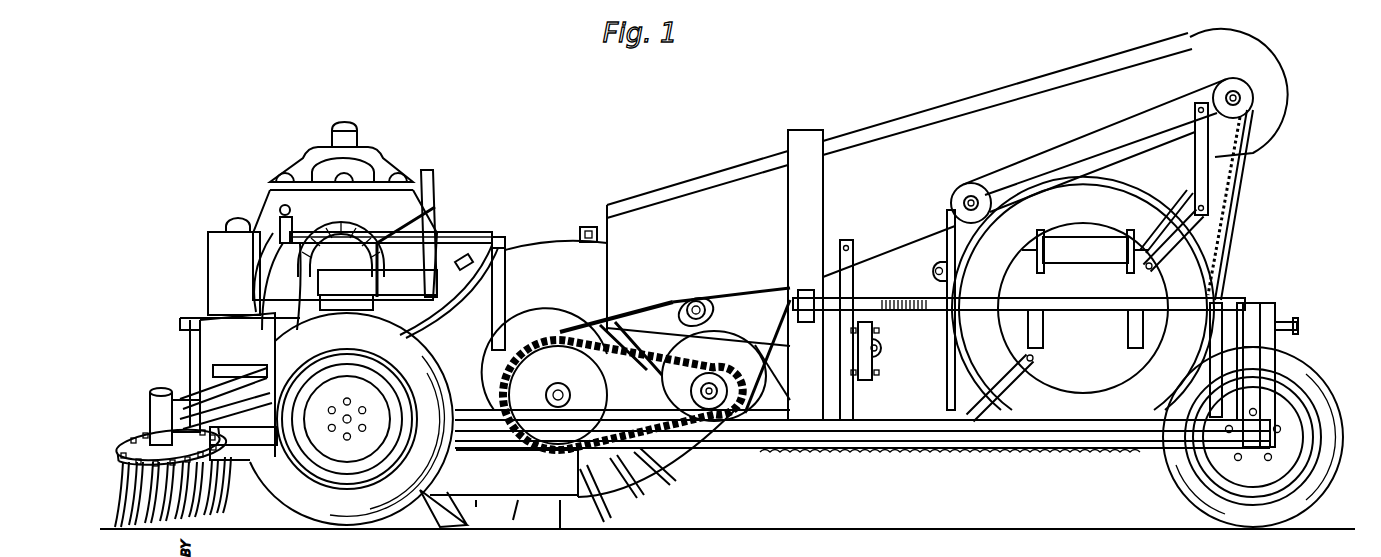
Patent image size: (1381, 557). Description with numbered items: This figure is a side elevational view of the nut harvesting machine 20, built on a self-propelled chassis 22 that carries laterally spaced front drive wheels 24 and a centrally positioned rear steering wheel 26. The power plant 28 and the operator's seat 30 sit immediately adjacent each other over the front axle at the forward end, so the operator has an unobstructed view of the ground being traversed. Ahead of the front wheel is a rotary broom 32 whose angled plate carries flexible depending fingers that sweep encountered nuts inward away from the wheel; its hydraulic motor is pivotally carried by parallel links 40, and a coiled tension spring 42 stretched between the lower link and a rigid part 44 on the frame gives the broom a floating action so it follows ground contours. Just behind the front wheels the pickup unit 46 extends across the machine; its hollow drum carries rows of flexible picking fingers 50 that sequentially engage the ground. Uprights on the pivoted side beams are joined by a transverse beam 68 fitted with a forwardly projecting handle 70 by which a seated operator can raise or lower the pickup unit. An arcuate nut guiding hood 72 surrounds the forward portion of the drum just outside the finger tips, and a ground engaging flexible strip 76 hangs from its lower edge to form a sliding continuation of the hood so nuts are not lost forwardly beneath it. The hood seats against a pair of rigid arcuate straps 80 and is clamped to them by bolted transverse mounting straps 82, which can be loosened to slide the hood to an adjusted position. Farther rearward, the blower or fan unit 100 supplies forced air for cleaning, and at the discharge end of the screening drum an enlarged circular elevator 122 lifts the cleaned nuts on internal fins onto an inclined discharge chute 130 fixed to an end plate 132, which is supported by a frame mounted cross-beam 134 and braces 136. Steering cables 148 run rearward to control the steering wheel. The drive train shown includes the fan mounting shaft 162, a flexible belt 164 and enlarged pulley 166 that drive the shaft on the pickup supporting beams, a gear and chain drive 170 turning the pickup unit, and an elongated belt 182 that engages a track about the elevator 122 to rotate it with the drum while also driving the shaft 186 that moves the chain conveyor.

The harvesting machine 20 is at (643, 182).
The self-propelled chassis 22 is at (732, 455).
The front drive wheels 24 is at (368, 516).
The rear steering wheel 26 is at (1298, 504).
The power plant 28 is at (383, 162).
The operator's seat 30 is at (433, 192).
The rotary broom 32 is at (121, 430).
The parallel links 40 is at (200, 398).
The coiled tension spring 42 is at (205, 387).
The rigid part 44 is at (239, 366).
The pickup unit 46 is at (644, 334).
The picking fingers 50 is at (606, 508).
The transverse beam 68 is at (502, 240).
The handle 70 is at (442, 232).
The nut guiding hood 72 is at (562, 236).
The flexible strip 76 is at (441, 522).
The arcuate straps 80 is at (466, 272).
The transverse mounting straps 82 is at (468, 256).
The blower or fan unit 100 is at (866, 437).
The circular elevator 122 is at (1200, 297).
The discharge chute 130 is at (1088, 264).
The end plate 132 is at (1115, 367).
The cross-beam 134 is at (940, 304).
The braces 136 is at (1162, 258).
The steering cables 148 is at (893, 445).
The fan mounting shaft 162 is at (880, 350).
The flexible belt 164 is at (710, 318).
The enlarged pulley 166 is at (728, 356).
The gear and chain drive 170 is at (550, 337).
The elongated belt 182 is at (1060, 142).
The shaft 186 is at (968, 203).